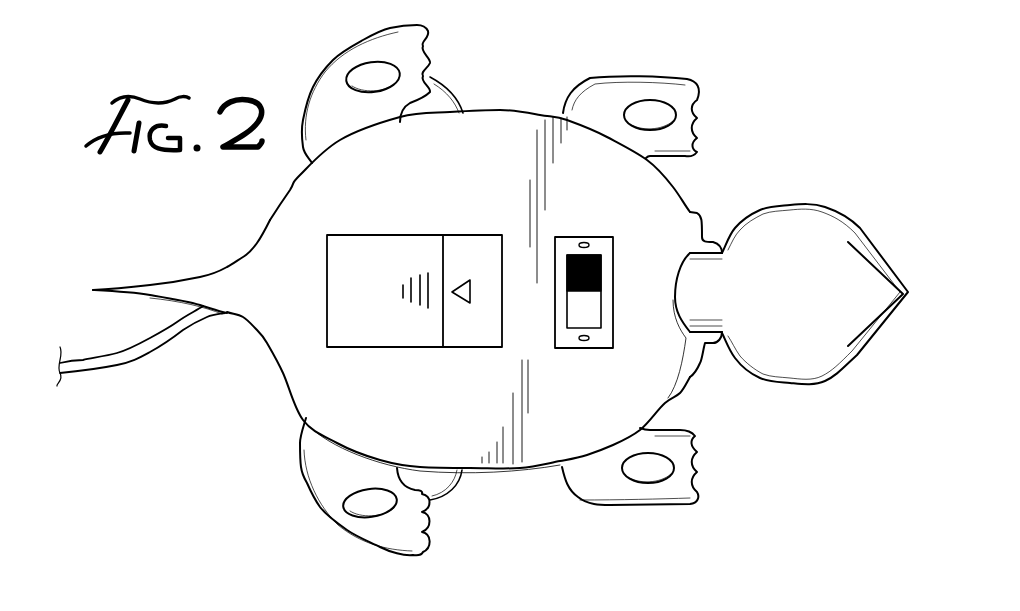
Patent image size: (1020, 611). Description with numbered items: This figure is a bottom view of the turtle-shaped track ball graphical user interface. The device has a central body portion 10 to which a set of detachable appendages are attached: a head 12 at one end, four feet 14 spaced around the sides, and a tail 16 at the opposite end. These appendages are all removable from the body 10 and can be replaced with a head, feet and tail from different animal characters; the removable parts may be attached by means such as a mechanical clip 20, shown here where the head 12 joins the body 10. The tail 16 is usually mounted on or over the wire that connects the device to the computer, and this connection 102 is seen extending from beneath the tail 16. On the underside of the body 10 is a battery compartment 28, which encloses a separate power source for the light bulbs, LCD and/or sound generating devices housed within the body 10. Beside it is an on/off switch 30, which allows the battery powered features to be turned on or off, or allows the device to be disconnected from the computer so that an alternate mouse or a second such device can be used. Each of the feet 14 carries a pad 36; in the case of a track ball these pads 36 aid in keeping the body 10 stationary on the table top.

The body portion 10 is at (505, 143).
The head 12 is at (819, 307).
The feet 14 is at (325, 463).
The tail 16 is at (133, 287).
The mechanical clip 20 is at (708, 210).
The battery compartment 28 is at (343, 330).
The on/off switch 30 is at (585, 312).
The pads 36 is at (373, 73).
The connection 102 is at (118, 365).